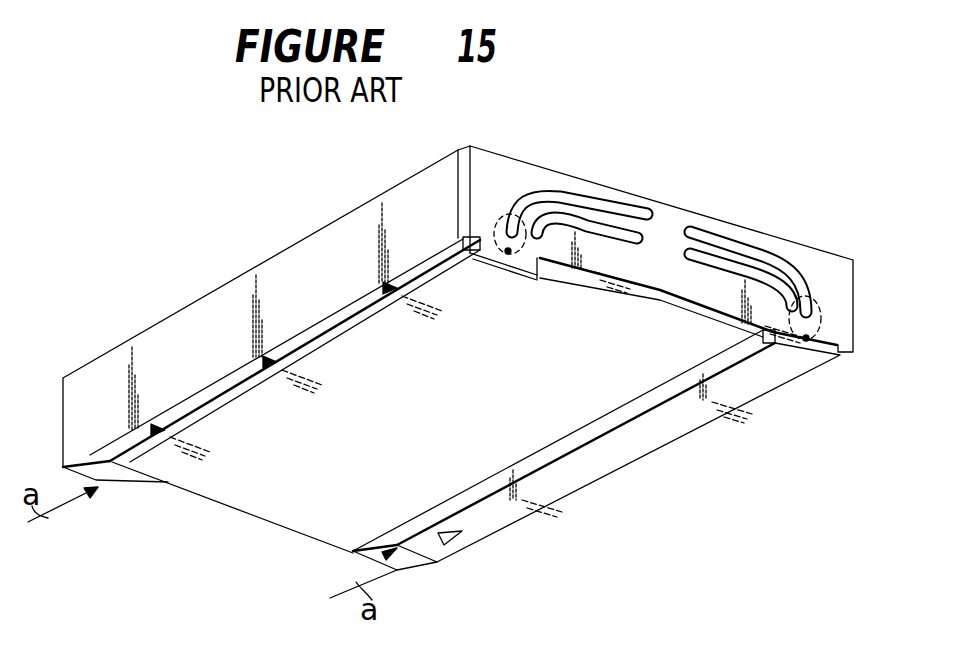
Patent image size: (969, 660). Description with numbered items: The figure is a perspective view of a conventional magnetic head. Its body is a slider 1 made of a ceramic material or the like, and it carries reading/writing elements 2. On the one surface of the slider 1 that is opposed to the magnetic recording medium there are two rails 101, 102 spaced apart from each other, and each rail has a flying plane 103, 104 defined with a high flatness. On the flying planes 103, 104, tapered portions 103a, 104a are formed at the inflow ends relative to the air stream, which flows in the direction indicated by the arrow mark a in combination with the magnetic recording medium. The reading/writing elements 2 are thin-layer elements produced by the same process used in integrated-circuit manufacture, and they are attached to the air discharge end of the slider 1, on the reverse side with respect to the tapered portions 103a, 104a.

The slider 1 is at (230, 327).
The reading/writing elements 2 is at (507, 225).
The rail 101 is at (120, 425).
The rail 102 is at (632, 412).
The flying plane 103 is at (353, 354).
The tapered portion 103a is at (128, 474).
The flying plane 104 is at (700, 388).
The tapered portion 104a is at (355, 555).